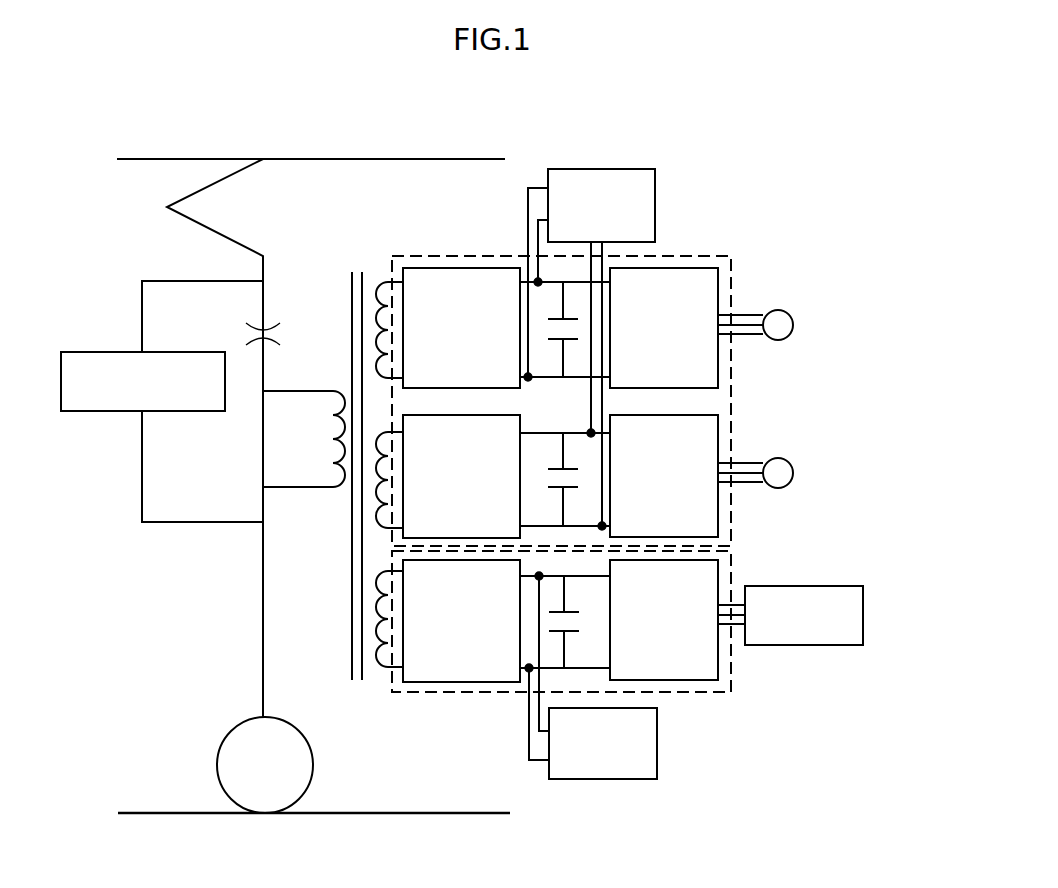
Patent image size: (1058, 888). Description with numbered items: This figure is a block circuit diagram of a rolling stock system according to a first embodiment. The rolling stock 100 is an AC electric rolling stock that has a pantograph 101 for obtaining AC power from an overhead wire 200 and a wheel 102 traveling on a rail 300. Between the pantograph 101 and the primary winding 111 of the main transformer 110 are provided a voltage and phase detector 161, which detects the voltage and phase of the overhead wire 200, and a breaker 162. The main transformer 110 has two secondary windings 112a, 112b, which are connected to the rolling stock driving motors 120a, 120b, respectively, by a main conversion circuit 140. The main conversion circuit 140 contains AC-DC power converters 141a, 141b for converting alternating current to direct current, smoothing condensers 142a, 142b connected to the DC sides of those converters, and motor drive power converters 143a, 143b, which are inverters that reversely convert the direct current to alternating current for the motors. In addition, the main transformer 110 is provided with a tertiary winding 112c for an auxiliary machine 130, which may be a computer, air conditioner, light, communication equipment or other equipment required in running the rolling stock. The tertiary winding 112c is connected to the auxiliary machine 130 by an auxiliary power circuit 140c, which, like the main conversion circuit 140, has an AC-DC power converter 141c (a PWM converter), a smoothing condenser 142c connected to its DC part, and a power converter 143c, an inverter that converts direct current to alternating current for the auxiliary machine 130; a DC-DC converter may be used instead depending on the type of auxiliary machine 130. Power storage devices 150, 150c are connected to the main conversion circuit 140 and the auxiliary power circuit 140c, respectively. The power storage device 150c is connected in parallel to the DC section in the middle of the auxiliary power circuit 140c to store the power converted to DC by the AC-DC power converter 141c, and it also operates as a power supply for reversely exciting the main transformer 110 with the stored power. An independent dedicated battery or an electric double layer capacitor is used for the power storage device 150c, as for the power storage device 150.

The rolling stock 100 is at (700, 175).
The pantograph 101 is at (246, 166).
The wheel 102 is at (239, 737).
The main transformer 110 is at (381, 471).
The primary winding 111 is at (328, 387).
The secondary winding 112a is at (376, 290).
The secondary winding 112b is at (377, 514).
The tertiary winding 112c is at (388, 680).
The rolling stock driving motor 120a is at (780, 312).
The rolling stock driving motor 120b is at (780, 463).
The auxiliary machine 130 is at (761, 584).
The main conversion circuit 140 is at (695, 256).
The auxiliary power circuit 140c is at (700, 694).
The AC-DC power converter 141a is at (450, 268).
The AC-DC power converter 141b is at (458, 416).
The AC-DC power converter 141c is at (460, 683).
The smoothing condenser 142a is at (567, 340).
The smoothing condenser 142b is at (564, 481).
The smoothing condenser 142c is at (565, 627).
The motor drive power converter 143a is at (664, 268).
The motor drive power converter 143b is at (722, 420).
The power converter for auxiliary machine 143c is at (720, 667).
The power storage device 150 is at (606, 168).
The power storage device 150c is at (595, 780).
The voltage and phase detector 161 is at (132, 352).
The breaker 162 is at (247, 345).
The overhead wire 200 is at (171, 158).
The rail 300 is at (300, 814).